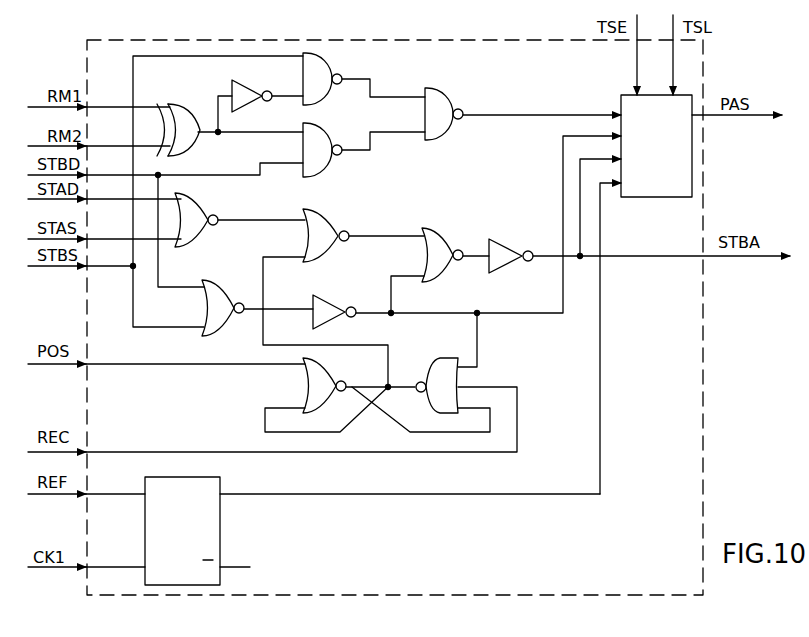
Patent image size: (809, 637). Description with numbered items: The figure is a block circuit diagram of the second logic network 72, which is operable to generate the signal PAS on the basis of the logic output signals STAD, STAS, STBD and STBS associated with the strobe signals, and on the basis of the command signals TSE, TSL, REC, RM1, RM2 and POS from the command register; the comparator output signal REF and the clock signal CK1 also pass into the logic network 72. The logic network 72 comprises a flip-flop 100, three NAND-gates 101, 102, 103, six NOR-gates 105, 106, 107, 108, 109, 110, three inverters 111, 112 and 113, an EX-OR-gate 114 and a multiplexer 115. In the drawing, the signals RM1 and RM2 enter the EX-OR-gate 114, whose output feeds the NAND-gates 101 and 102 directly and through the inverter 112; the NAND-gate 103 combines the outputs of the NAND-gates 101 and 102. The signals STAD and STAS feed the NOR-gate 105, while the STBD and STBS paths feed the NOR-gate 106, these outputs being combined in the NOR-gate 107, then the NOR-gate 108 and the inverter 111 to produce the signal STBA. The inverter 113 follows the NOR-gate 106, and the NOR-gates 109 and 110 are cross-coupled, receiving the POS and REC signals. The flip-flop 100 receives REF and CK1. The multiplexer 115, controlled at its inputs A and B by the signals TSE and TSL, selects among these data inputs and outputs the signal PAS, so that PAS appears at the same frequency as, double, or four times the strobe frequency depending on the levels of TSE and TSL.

The second logic network 72 is at (688, 365).
The flip-flop 100 is at (221, 535).
The NAND-gate 101 is at (324, 63).
The NAND-gate 102 is at (320, 131).
The NAND-gate 103 is at (439, 136).
The NOR-gate 105 is at (206, 206).
The NOR-gate 106 is at (219, 290).
The NOR-gate 107 is at (328, 226).
The NOR-gate 108 is at (440, 236).
The NOR-gate 109 is at (310, 384).
The NOR-gate 110 is at (442, 361).
The inverter 111 is at (500, 243).
The inverter 112 is at (247, 86).
The inverter 113 is at (328, 306).
The EX-OR-gate 114 is at (188, 144).
The multiplexer 115 is at (663, 198).